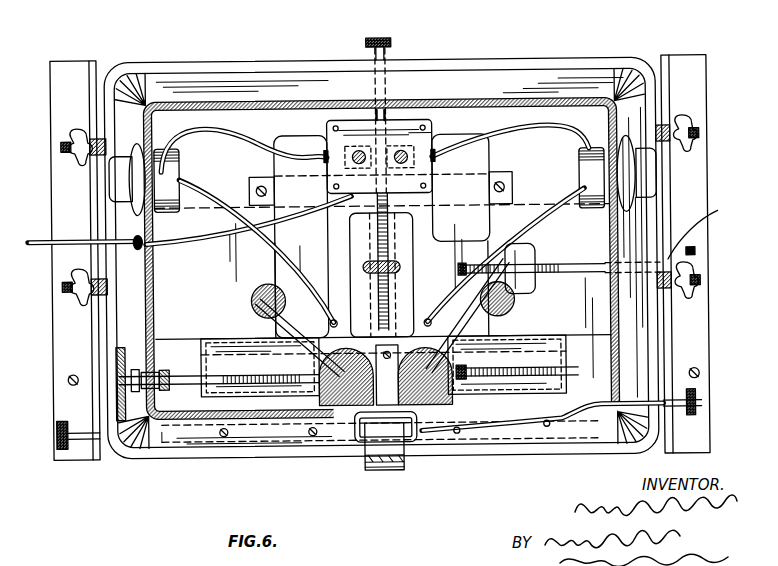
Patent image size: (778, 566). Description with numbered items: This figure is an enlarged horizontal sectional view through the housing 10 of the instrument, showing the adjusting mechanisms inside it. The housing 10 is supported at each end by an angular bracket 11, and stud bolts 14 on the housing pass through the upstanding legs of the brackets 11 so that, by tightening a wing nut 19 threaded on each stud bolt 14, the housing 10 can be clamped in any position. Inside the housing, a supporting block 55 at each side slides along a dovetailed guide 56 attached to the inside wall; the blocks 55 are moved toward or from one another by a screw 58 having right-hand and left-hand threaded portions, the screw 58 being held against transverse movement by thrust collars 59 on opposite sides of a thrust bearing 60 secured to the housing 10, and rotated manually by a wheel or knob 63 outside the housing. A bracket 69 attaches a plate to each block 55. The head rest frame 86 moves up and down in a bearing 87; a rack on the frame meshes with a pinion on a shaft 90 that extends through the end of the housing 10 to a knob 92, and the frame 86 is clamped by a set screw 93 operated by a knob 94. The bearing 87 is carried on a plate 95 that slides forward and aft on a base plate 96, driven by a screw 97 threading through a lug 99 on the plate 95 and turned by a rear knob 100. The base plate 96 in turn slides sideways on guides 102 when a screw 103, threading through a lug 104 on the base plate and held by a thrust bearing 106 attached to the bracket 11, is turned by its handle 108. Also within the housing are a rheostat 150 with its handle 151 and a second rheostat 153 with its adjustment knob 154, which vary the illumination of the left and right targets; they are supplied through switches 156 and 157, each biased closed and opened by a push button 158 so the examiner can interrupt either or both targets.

The housing 10 is at (540, 98).
The angular bracket 11 is at (698, 62).
The stud bolt 14 is at (61, 143).
The wing nut 19 is at (76, 128).
The supporting block 55 is at (318, 402).
The dovetailed guide 56 is at (223, 394).
The screw 58 is at (160, 424).
The thrust collar 59 is at (173, 376).
The thrust bearing 60 is at (157, 370).
The wheel or knob 63 is at (114, 395).
The bracket 69 is at (258, 296).
The frame 86 is at (385, 461).
The bearing 87 is at (407, 443).
The shaft 90 is at (563, 405).
The knob 92 is at (696, 407).
The set screw 93 is at (83, 442).
The knob 94 is at (60, 443).
The plate 95 is at (413, 244).
The base plate 96 is at (478, 167).
The screw 97 is at (390, 302).
The lug 99 is at (434, 97).
The knob 100 is at (392, 41).
The guide 102 is at (258, 328).
The screw 103 is at (597, 275).
The lug 104 is at (516, 266).
The thrust bearing 106 is at (706, 228).
The handle 108 is at (696, 253).
The adjustable rheostat 150 is at (182, 172).
The handle 151 is at (110, 186).
The rheostat 153 is at (578, 172).
The adjustment knob 154 is at (645, 187).
The switch 156 is at (322, 138).
The switch 157 is at (440, 138).
The push button 158 is at (360, 164).